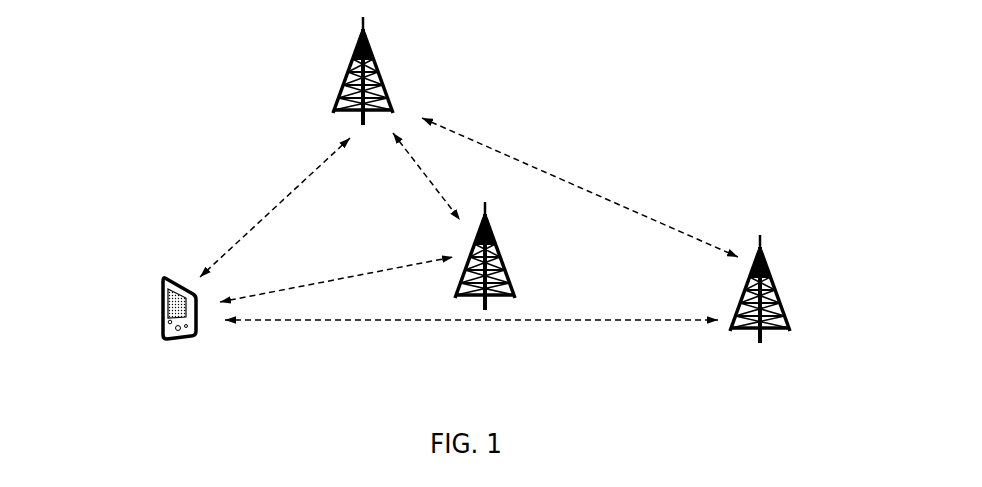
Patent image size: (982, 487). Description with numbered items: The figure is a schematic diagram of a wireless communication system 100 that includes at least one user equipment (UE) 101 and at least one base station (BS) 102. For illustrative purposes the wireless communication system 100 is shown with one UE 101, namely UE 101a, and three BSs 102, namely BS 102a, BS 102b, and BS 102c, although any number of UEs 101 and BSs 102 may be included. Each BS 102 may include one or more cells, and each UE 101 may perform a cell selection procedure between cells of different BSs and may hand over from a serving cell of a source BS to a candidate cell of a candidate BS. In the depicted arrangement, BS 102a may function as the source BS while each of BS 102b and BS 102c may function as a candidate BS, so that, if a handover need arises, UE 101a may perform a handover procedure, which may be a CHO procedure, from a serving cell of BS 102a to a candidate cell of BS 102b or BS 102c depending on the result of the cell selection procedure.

The wireless communication system 100 is at (775, 118).
The user equipment 101 is at (148, 318).
The UE 101a is at (150, 273).
The base station 102 is at (328, 87).
The BS 102a is at (395, 87).
The BS 102b is at (505, 262).
The BS 102c is at (780, 278).